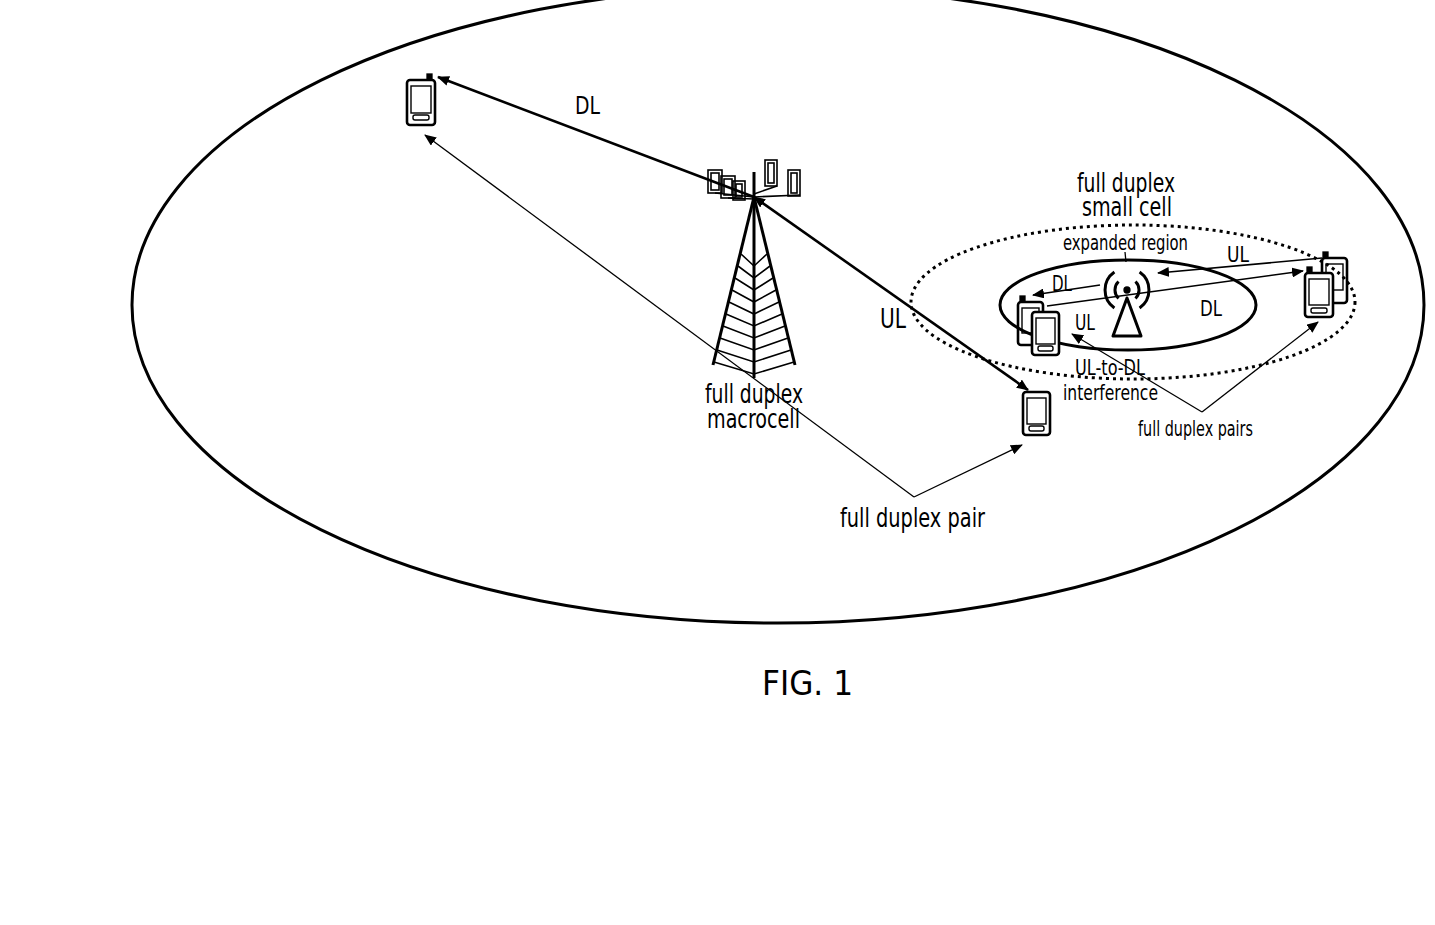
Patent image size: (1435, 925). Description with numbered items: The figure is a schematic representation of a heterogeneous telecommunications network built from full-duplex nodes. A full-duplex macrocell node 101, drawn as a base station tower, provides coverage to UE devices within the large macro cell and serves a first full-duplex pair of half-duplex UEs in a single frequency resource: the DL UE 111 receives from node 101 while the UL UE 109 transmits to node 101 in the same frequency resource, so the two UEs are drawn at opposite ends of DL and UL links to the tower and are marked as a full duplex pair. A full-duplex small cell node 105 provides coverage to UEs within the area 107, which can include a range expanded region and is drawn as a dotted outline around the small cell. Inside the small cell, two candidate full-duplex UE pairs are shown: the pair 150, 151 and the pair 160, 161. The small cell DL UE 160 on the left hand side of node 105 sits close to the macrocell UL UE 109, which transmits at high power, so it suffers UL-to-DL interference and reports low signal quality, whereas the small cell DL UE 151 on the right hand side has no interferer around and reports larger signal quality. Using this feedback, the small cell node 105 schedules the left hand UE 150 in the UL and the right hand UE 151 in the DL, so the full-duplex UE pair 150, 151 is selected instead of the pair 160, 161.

The full-duplex macrocell node 101 is at (752, 166).
The small cell full-duplex node 105 is at (1160, 224).
The small cell coverage area 107 is at (1030, 230).
The UL UE 109 is at (1040, 437).
The DL UE 111 is at (412, 128).
The small cell UE 150 is at (1030, 352).
The small cell DL UE 160 is at (1018, 312).
The small cell DL UE 151 is at (1330, 318).
The small cell UE 161 is at (1340, 258).